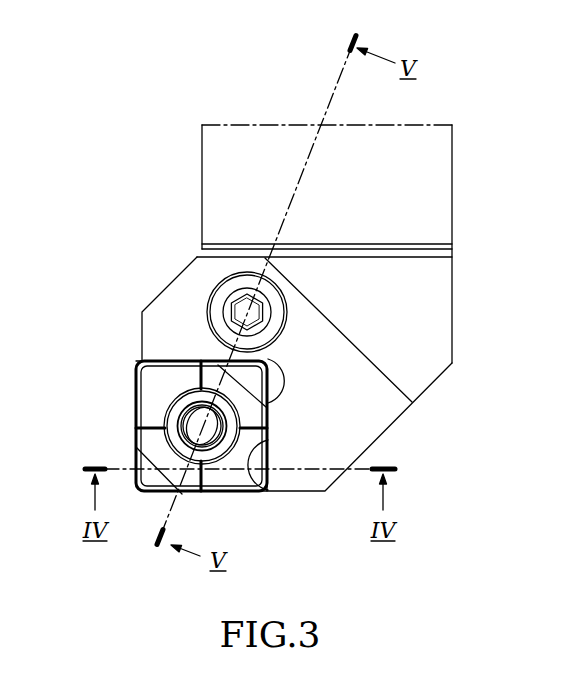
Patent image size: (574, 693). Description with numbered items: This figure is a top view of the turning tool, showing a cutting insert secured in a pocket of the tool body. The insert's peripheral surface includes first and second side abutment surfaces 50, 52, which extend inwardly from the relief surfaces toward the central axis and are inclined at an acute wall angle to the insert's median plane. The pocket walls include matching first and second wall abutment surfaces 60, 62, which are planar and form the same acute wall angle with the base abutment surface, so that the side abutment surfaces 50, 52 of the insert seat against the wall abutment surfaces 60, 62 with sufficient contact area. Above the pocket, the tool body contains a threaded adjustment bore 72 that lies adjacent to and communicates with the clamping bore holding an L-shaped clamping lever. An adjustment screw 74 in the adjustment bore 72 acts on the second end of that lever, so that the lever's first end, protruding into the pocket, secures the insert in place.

The first side abutment surface 50 is at (270, 447).
The second side abutment surface 52 is at (172, 360).
The first wall abutment surface 60 is at (262, 491).
The second wall abutment surface 62 is at (162, 363).
The threaded adjustment bore 72 is at (217, 310).
The adjustment screw 74 is at (236, 292).